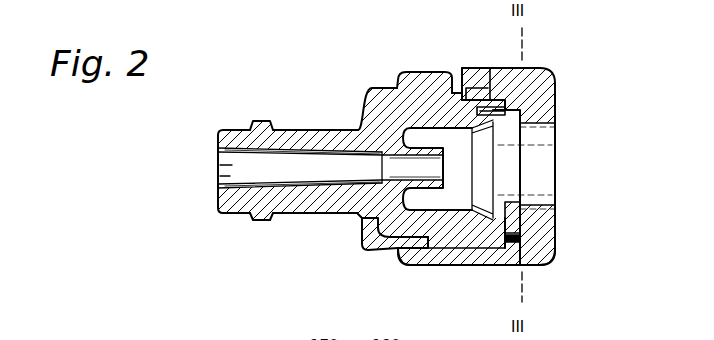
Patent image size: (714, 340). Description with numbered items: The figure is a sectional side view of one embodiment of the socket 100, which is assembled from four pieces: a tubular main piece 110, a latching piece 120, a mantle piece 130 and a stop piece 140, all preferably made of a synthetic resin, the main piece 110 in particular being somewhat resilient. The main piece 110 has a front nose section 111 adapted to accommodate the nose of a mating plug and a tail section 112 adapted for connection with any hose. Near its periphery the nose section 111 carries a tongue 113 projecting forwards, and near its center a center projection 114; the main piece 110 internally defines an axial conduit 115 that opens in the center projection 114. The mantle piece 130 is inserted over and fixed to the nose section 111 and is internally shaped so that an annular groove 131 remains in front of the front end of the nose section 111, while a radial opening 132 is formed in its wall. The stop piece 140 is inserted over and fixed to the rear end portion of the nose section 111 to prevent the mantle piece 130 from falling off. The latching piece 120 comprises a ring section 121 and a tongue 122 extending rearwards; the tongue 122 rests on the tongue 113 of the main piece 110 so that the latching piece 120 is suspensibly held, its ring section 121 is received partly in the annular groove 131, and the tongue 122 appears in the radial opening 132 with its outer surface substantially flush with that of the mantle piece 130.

The socket 100 is at (333, 103).
The tubular main piece 110 is at (292, 130).
The front nose section 111 is at (382, 87).
The tail section 112 is at (236, 134).
The tongue 113 is at (493, 100).
The center projection 114 is at (428, 188).
The axial conduit 115 is at (220, 178).
The latching piece 120 is at (521, 60).
The ring section 121 is at (517, 224).
The tongue 122 is at (468, 74).
The mantle piece 130 is at (460, 266).
The annular groove 131 is at (515, 243).
The radial opening 132 is at (444, 73).
The stop piece 140 is at (372, 237).